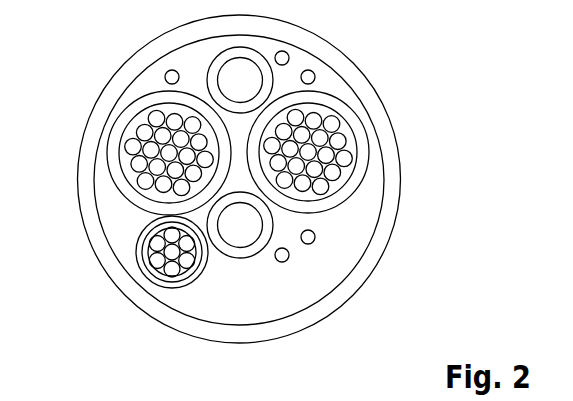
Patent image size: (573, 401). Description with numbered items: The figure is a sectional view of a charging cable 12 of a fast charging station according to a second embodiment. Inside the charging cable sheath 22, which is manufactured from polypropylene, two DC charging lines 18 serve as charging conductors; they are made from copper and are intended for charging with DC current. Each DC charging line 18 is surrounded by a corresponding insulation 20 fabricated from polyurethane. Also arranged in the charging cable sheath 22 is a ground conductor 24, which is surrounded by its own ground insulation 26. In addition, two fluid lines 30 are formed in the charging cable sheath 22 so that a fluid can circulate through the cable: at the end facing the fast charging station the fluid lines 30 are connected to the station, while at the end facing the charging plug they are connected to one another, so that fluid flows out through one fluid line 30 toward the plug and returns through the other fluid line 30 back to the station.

The charging cable 12 is at (84, 83).
The DC charging line 18 is at (138, 165).
The insulation 20 is at (120, 212).
The charging cable sheath 22 is at (380, 241).
The ground conductor 24 is at (168, 268).
The ground insulation 26 is at (141, 248).
The fluid line 30 is at (228, 70).